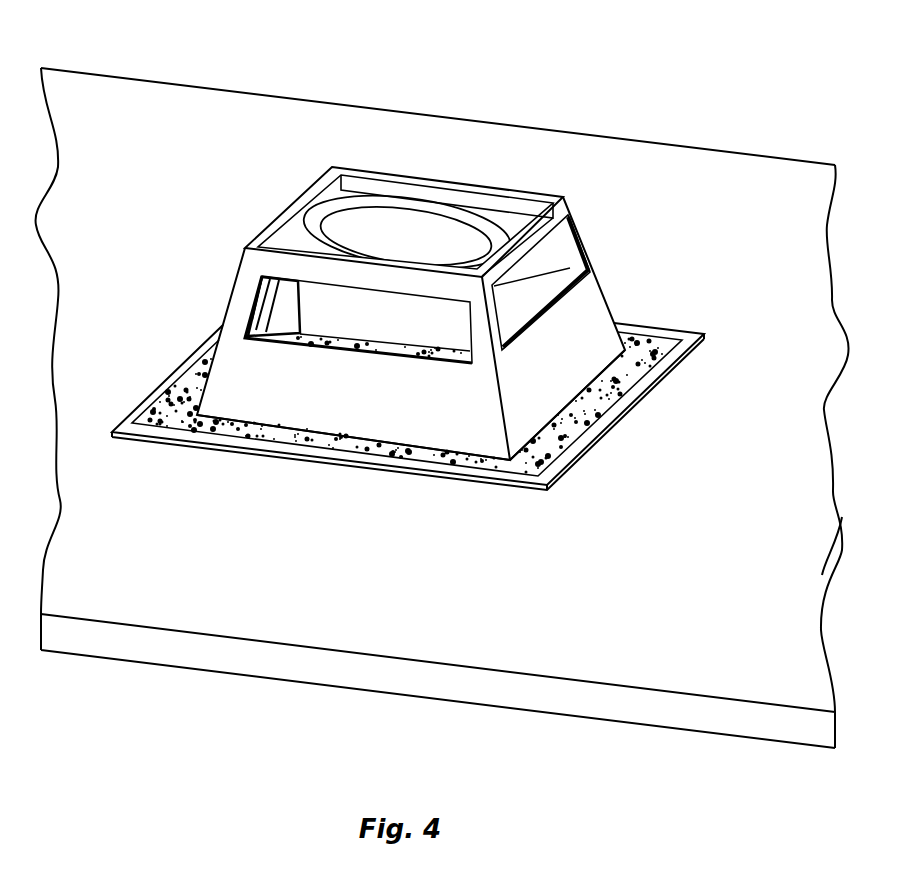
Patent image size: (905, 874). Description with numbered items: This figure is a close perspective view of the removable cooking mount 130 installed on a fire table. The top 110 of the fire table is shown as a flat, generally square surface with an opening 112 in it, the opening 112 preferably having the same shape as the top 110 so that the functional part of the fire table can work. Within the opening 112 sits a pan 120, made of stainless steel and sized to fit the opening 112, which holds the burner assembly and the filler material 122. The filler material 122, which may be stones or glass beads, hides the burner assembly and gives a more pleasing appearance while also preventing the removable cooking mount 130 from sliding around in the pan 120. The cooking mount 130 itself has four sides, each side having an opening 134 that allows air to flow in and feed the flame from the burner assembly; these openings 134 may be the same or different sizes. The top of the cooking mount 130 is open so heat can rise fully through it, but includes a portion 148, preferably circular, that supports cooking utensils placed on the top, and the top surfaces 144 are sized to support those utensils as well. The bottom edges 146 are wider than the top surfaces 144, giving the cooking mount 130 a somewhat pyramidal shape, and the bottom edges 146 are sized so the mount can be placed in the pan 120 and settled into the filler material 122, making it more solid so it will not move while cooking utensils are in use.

The top 110 is at (184, 106).
The opening 112 is at (626, 418).
The pan 120 is at (646, 385).
The filler material 122 is at (640, 358).
The removable cooking mount 130 is at (424, 260).
The opening 134 is at (570, 239).
The top surfaces 144 is at (558, 194).
The bottom edges 146 is at (567, 449).
The portion 148 is at (373, 215).